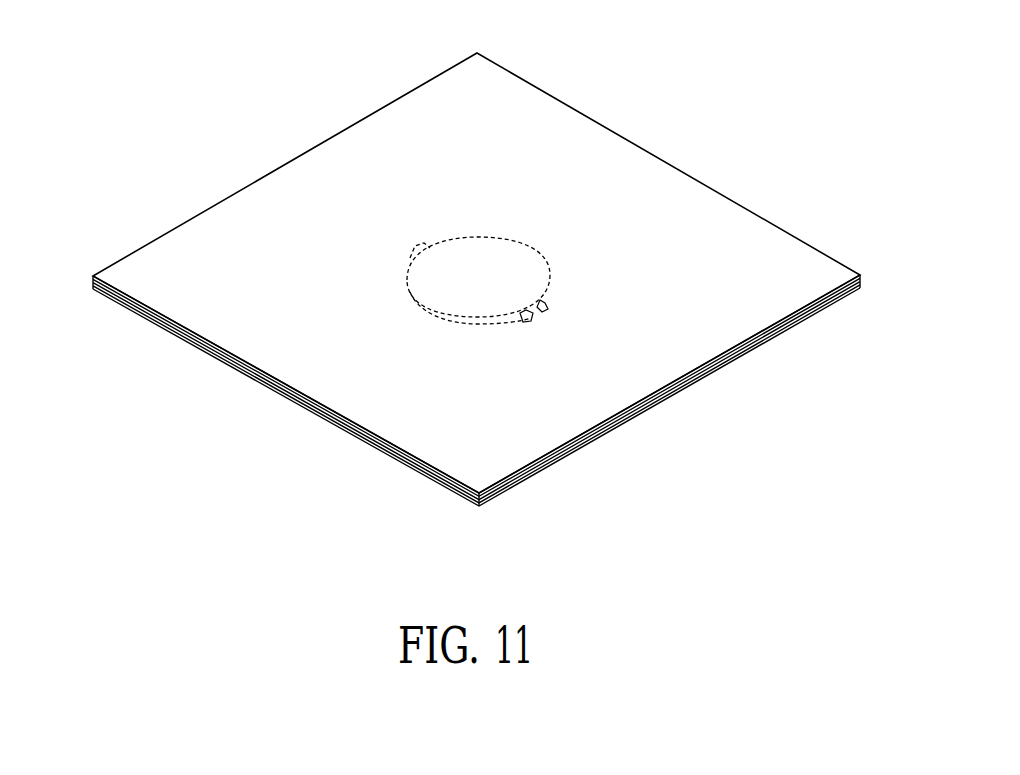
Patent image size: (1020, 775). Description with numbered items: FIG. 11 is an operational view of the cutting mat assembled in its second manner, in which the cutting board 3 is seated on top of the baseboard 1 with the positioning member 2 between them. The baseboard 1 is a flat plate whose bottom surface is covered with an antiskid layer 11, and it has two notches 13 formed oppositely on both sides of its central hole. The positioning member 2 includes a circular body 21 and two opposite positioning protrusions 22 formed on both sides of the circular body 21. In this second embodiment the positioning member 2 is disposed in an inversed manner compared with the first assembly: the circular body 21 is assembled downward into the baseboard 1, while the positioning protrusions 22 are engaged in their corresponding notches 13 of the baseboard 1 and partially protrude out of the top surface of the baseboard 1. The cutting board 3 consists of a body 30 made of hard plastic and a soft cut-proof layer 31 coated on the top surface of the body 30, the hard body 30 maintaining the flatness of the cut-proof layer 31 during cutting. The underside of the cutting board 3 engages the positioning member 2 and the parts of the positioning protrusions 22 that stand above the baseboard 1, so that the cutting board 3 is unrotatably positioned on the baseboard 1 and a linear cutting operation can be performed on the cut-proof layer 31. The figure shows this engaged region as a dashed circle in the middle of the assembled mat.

The baseboard 1 is at (711, 385).
The antiskid layer 11 is at (649, 411).
The notches 13 is at (537, 318).
The positioning member 2 is at (430, 288).
The circular body 21 is at (437, 320).
The positioning protrusions 22 is at (519, 316).
The cutting board 3 is at (742, 186).
The body 30 is at (817, 315).
The cut-proof layer 31 is at (788, 249).